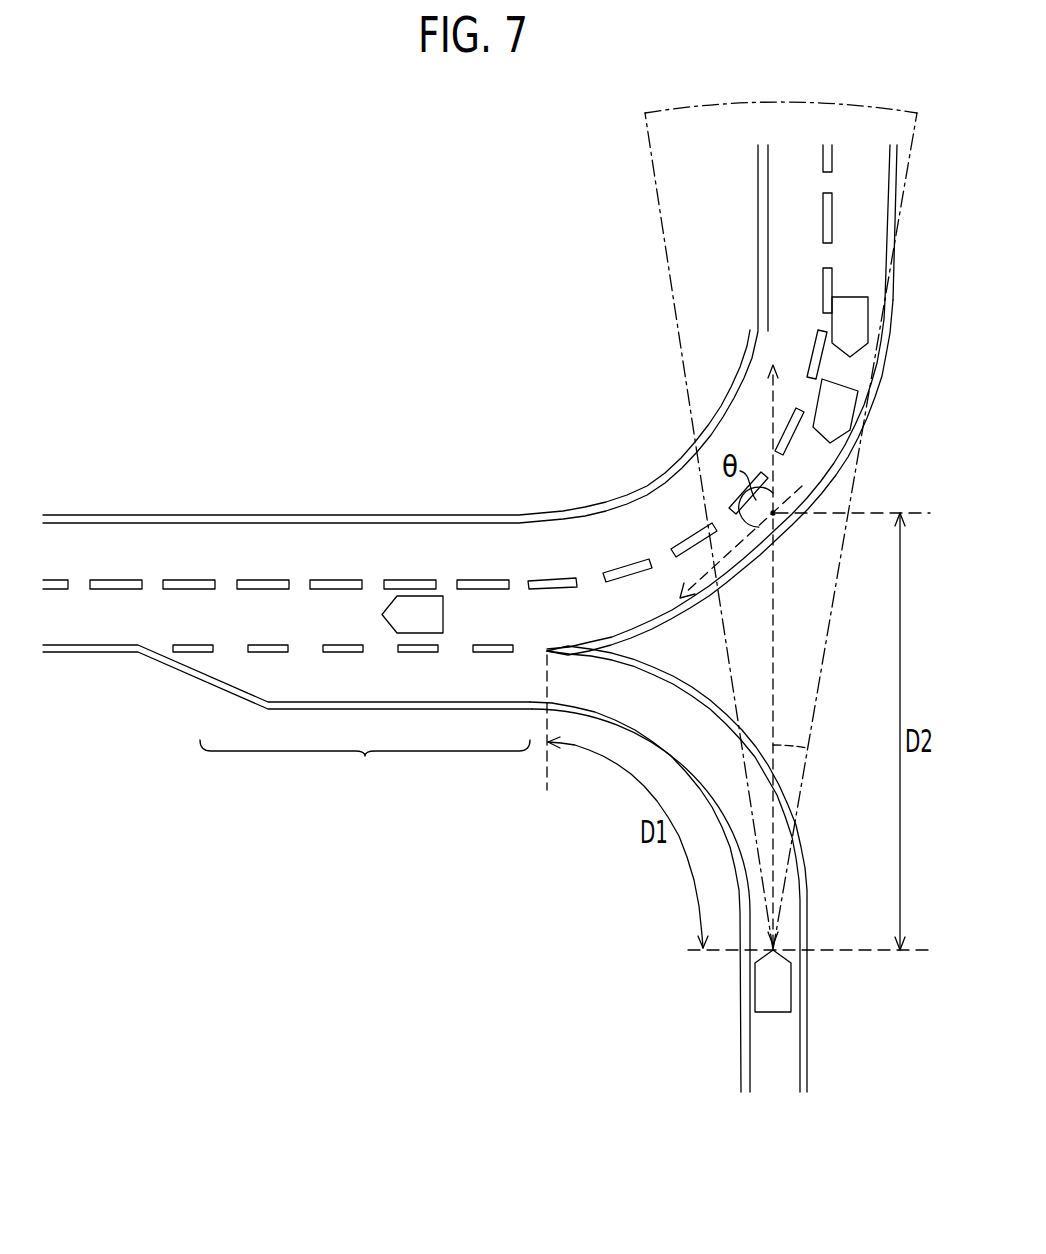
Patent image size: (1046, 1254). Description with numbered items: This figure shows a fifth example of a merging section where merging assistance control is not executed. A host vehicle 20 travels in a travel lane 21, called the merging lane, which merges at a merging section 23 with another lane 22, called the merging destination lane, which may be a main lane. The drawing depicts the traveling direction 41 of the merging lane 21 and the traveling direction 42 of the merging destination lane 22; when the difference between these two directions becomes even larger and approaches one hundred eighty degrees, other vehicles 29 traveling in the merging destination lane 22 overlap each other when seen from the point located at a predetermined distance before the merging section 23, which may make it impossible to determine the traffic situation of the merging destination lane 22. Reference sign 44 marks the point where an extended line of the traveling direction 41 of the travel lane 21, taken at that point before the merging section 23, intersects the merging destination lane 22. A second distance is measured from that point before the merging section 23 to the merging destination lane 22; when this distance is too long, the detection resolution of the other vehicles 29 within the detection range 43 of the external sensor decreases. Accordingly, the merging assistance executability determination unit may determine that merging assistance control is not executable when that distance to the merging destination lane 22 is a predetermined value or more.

The host vehicle 20 is at (772, 987).
The travel lane 21 is at (786, 1047).
The other lane 22 is at (860, 212).
The merging section 23 is at (351, 722).
The other vehicles 29 is at (832, 403).
The traveling direction of the merging lane 41 is at (810, 750).
The traveling direction of the merging destination lane 42 is at (695, 538).
The detection range 43 is at (648, 158).
The intersection point 44 is at (777, 517).